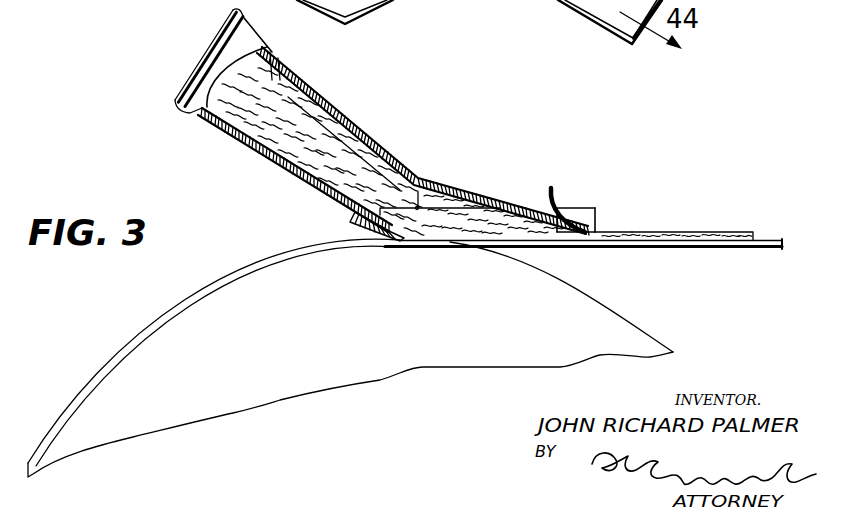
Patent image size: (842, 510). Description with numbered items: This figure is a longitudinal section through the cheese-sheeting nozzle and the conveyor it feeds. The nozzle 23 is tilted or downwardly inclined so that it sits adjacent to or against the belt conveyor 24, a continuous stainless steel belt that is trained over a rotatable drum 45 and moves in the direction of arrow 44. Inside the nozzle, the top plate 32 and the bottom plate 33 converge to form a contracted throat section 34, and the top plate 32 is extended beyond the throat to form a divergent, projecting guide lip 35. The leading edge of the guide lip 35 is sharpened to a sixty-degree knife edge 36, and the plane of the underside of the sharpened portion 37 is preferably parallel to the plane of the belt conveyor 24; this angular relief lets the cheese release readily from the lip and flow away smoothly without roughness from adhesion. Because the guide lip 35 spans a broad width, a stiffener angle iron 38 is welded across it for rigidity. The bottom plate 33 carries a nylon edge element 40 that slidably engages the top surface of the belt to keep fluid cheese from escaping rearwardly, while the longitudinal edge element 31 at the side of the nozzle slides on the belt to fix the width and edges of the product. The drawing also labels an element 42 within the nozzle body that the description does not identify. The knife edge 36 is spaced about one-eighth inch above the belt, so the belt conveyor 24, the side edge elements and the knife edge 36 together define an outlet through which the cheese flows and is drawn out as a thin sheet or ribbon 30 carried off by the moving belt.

The nozzle 23 is at (452, 138).
The belt conveyor 24 is at (785, 221).
The sheet or ribbon 30 is at (703, 230).
The longitudinal edge element 31 is at (568, 208).
The top plate 32 is at (355, 125).
The bottom plate 33 is at (302, 178).
The contracted throat section 34 is at (413, 180).
The guide lip 35 is at (490, 198).
The knife edge 36 is at (595, 228).
The sharpened portion 37 is at (629, 235).
The stiffener angle iron 38 is at (553, 190).
The nylon edge element 40 is at (358, 226).
The bag of material 42 is at (289, 96).
The arrow 44 is at (776, 263).
The rotatable drum 45 is at (264, 287).